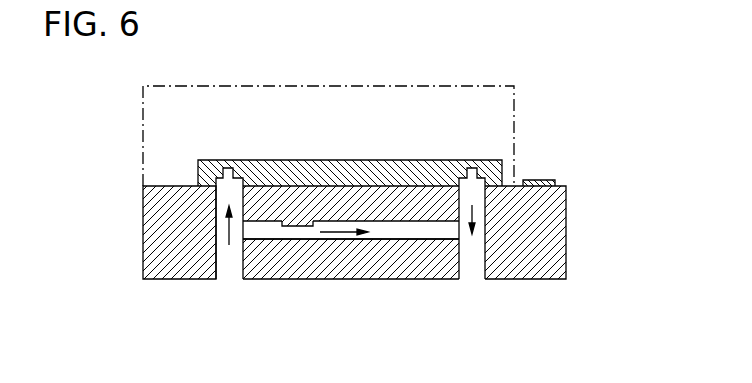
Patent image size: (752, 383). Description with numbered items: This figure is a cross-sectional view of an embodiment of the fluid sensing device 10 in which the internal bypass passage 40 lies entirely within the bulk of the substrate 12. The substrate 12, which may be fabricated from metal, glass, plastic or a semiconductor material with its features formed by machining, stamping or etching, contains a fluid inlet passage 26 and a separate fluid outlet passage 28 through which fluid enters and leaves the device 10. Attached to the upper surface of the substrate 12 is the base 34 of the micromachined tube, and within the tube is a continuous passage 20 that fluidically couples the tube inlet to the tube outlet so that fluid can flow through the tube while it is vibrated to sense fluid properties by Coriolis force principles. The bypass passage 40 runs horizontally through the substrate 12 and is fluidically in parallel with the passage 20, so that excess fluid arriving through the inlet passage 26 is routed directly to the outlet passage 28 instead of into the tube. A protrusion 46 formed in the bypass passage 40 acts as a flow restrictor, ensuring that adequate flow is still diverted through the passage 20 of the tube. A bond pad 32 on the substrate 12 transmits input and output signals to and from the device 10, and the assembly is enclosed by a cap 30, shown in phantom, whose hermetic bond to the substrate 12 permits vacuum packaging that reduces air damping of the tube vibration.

The fluid sensing device 10 is at (107, 237).
The substrate 12 is at (553, 232).
The continuous passage 20 is at (478, 160).
The fluid inlet passage 26 is at (230, 265).
The fluid outlet passage 28 is at (472, 263).
The cap 30 is at (503, 83).
The bond pad 32 is at (553, 178).
The base 34 is at (348, 160).
The internal bypass passage 40 is at (397, 228).
The protrusion 46 is at (303, 226).